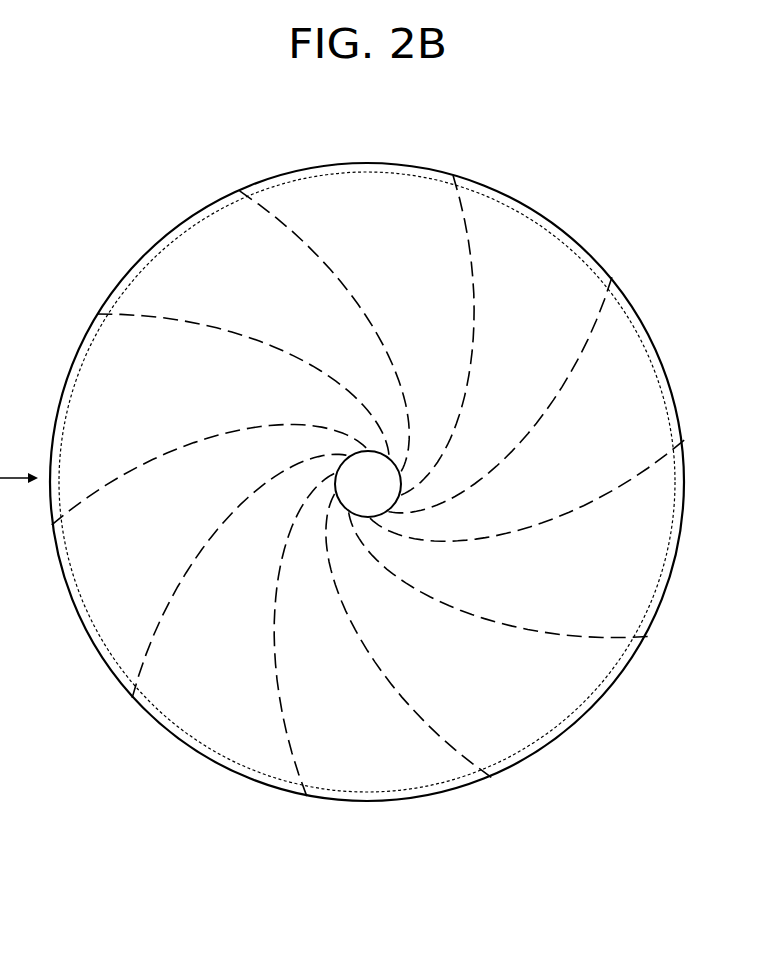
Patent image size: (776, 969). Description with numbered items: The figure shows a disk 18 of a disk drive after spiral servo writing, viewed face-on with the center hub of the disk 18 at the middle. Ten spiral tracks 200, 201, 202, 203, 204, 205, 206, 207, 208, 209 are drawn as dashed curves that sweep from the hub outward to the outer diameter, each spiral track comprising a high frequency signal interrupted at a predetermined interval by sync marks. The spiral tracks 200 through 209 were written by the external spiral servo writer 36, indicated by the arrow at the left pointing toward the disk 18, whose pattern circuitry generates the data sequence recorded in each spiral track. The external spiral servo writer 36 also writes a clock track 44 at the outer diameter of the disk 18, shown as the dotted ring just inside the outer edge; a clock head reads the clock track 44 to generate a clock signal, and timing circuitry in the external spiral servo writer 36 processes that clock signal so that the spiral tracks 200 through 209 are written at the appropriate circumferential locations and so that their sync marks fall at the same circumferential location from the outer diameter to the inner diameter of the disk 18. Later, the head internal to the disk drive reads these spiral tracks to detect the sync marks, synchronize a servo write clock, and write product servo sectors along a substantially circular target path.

The disk 18 is at (568, 228).
The clock track 44 is at (667, 573).
The external spiral servo writer 36 is at (19, 324).
The spiral track 200 is at (467, 223).
The spiral track 201 is at (597, 317).
The spiral track 202 is at (654, 470).
The spiral track 203 is at (593, 633).
The spiral track 204 is at (460, 756).
The spiral track 205 is at (288, 748).
The spiral track 206 is at (142, 655).
The spiral track 207 is at (87, 498).
The spiral track 208 is at (134, 315).
The spiral track 209 is at (268, 211).